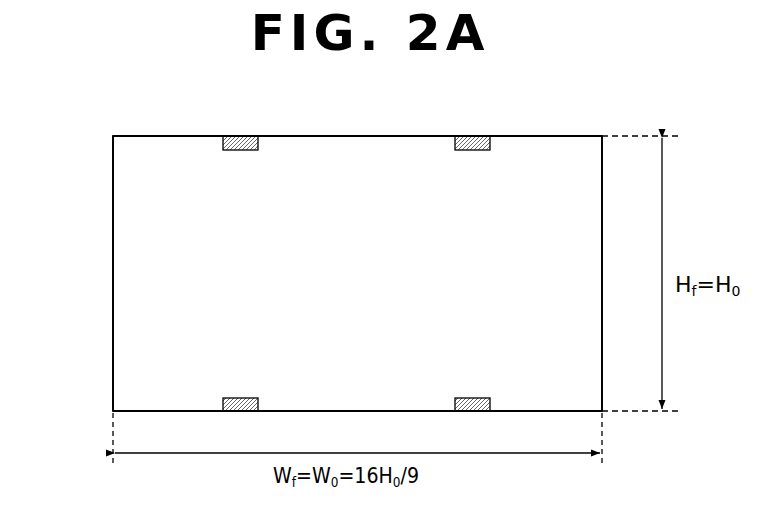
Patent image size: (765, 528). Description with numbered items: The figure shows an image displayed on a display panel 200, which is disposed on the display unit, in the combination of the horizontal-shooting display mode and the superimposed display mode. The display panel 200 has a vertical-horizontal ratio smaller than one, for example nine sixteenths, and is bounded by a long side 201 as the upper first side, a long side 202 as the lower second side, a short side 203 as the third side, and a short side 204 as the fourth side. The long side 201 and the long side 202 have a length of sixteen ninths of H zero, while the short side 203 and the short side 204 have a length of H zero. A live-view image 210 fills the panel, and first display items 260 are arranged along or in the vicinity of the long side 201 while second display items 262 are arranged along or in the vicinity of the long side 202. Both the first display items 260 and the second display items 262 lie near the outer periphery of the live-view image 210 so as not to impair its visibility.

The display panel 200 is at (560, 128).
The long side 201 is at (357, 136).
The long side 202 is at (353, 411).
The short side 203 is at (113, 243).
The short side 204 is at (602, 260).
The live-view image 210 is at (146, 148).
The first display items 260 is at (238, 136).
The second display items 262 is at (238, 398).